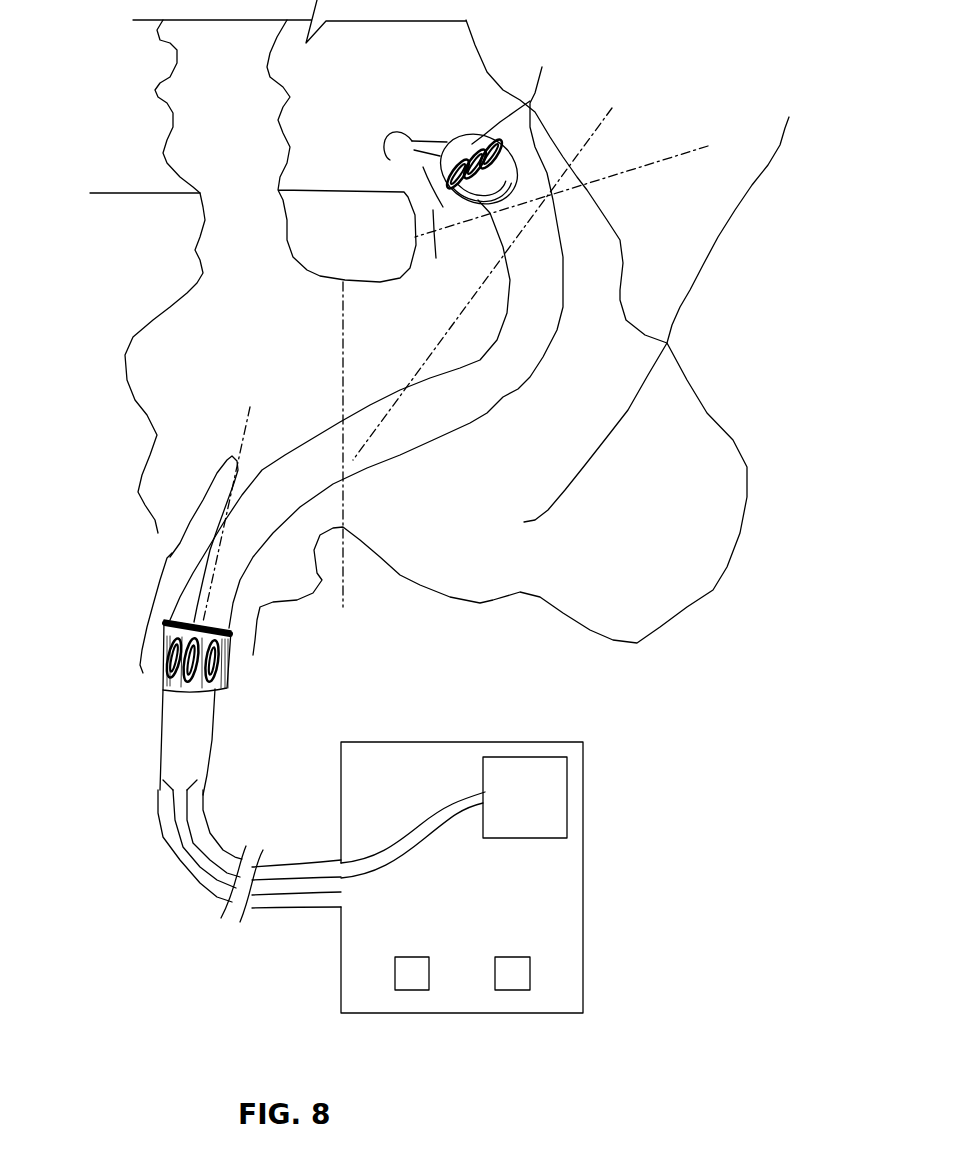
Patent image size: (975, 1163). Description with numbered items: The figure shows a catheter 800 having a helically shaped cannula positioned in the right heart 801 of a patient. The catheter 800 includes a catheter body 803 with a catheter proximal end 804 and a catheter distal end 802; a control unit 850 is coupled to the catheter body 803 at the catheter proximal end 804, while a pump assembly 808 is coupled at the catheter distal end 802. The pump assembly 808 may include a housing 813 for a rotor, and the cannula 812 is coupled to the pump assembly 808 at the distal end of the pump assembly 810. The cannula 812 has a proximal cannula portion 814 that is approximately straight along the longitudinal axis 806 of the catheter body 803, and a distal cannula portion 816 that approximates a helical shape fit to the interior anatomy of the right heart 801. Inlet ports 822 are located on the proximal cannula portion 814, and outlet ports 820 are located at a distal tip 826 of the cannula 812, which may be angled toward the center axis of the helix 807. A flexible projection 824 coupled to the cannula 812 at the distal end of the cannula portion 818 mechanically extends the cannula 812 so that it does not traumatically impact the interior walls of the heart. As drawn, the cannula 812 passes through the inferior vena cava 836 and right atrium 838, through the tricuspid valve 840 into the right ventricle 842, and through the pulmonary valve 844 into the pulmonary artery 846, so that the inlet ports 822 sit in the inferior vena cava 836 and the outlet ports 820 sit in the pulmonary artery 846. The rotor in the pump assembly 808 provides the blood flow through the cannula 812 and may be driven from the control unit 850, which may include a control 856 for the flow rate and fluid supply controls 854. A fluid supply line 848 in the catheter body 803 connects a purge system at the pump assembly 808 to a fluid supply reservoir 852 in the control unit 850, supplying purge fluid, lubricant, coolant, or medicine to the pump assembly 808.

The catheter 800 is at (192, 443).
The right heart 801 is at (140, 72).
The catheter distal end 802 is at (190, 873).
The catheter body 803 is at (167, 837).
The catheter proximal end 804 is at (272, 905).
The longitudinal axis 806 is at (250, 428).
The center axis of the helix 807 is at (612, 108).
The pump assembly 808 is at (172, 730).
The distal end of the pump assembly 810 is at (224, 688).
The cannula 812 is at (507, 377).
The housing 813 is at (170, 753).
The proximal cannula portion 814 is at (143, 606).
The distal cannula portion 816 is at (656, 319).
The distal end of the cannula portion 818 is at (457, 135).
The outlet ports 820 is at (397, 336).
The inlet ports 822 is at (222, 665).
The flexible projection 824 is at (398, 122).
The distal tip 826 is at (440, 231).
The inferior vena cava 836 is at (158, 492).
The right atrium 838 is at (206, 363).
The tricuspid valve 840 is at (347, 596).
The right ventricle 842 is at (701, 550).
The pulmonary valve 844 is at (693, 148).
The pulmonary artery 846 is at (366, 53).
The fluid supply line 848 is at (308, 889).
The control unit 850 is at (565, 885).
The fluid supply reservoir 852 is at (550, 792).
The fluid supply controls 854 is at (520, 977).
The control 856 is at (420, 977).